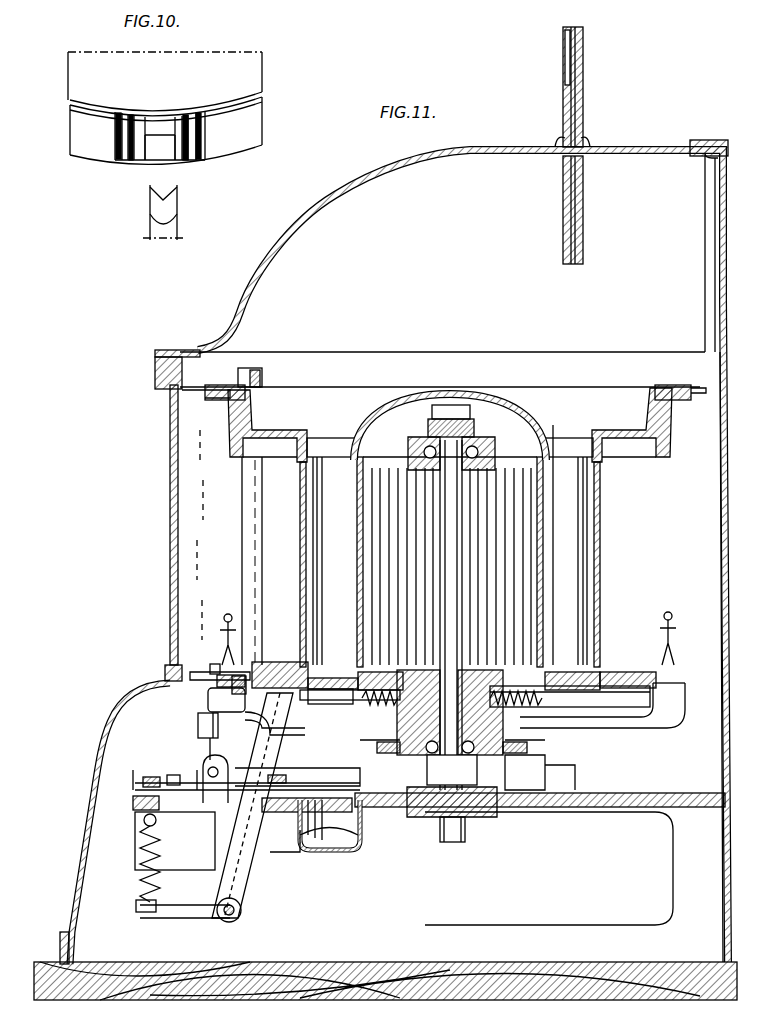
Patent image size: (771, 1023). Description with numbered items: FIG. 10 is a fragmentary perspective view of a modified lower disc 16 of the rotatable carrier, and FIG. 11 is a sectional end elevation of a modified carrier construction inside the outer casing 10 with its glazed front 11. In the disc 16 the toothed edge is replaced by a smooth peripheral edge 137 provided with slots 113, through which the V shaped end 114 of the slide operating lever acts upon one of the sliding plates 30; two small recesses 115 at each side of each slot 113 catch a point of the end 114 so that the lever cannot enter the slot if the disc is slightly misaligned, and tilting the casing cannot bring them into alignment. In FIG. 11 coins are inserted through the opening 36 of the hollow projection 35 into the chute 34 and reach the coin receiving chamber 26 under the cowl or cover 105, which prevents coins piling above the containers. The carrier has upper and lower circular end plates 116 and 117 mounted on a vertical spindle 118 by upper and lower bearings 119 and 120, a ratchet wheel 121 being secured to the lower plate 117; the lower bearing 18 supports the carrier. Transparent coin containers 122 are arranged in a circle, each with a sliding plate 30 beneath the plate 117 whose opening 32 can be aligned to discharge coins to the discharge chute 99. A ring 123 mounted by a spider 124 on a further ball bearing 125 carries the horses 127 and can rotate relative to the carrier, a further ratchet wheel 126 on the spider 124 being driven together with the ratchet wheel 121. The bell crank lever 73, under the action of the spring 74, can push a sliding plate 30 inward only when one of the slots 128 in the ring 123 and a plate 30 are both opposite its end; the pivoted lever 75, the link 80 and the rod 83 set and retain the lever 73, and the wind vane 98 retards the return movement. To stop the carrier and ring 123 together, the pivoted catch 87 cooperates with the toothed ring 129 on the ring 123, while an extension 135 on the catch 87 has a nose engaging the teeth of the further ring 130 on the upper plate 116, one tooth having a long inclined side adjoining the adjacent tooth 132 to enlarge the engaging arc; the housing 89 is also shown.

In FIG. 10, the lower disc 16 is at (90, 76).
In FIG. 10, the smooth peripheral edge 137 is at (82, 137).
In FIG. 10, the small recesses 115 is at (132, 116).
In FIG. 10, the slots 113 is at (150, 150).
In FIG. 10, the end of the slide operating lever 114 is at (170, 205).
In FIG. 11, the outer casing 10 is at (316, 206).
In FIG. 11, the glazed front 11 is at (170, 527).
In FIG. 11, the lower bearing 18 is at (592, 808).
In FIG. 11, the coin receiving chamber 26 is at (330, 438).
In FIG. 11, the sliding plate 30 is at (380, 676).
In FIG. 11, the opening 32 is at (328, 700).
In FIG. 11, the chute 34 is at (560, 207).
In FIG. 11, the hollow projection 35 is at (583, 102).
In FIG. 11, the opening 36 is at (563, 70).
In FIG. 11, the bell crank lever 73 is at (248, 858).
In FIG. 11, the spring 74 is at (160, 846).
In FIG. 11, the pivoted lever 75 is at (276, 780).
In FIG. 11, the link 80 is at (160, 776).
In FIG. 11, the rod 83 is at (208, 768).
In FIG. 11, the pivoted catch 87 is at (553, 425).
In FIG. 11, the housing 89 is at (334, 688).
In FIG. 11, the wind vane 98 is at (208, 745).
In FIG. 11, the discharge chute 99 is at (334, 846).
In FIG. 11, the cowl or cover 105 is at (440, 392).
In FIG. 11, the upper circular end plate 116 is at (624, 428).
In FIG. 11, the lower circular end plate 117 is at (284, 662).
In FIG. 11, the vertical spindle 118 is at (455, 566).
In FIG. 11, the upper bearing 119 is at (500, 790).
In FIG. 11, the lower bearing 120 is at (470, 442).
In FIG. 11, the ratchet wheel 121 is at (400, 798).
In FIG. 11, the coin containers 122 is at (600, 508).
In FIG. 11, the ring 123 is at (222, 694).
In FIG. 11, the spider 124 is at (655, 728).
In FIG. 11, the ball bearing 125 is at (382, 764).
In FIG. 11, the further ratchet wheel 126 is at (540, 740).
In FIG. 11, the horses 127 is at (443, 623).
In FIG. 11, the slots 128 is at (222, 712).
In FIG. 11, the toothed ring 129 is at (212, 664).
In FIG. 11, the further ring 130 is at (220, 388).
In FIG. 11, the adjacent tooth 132 is at (195, 392).
In FIG. 11, the extension 135 is at (264, 372).